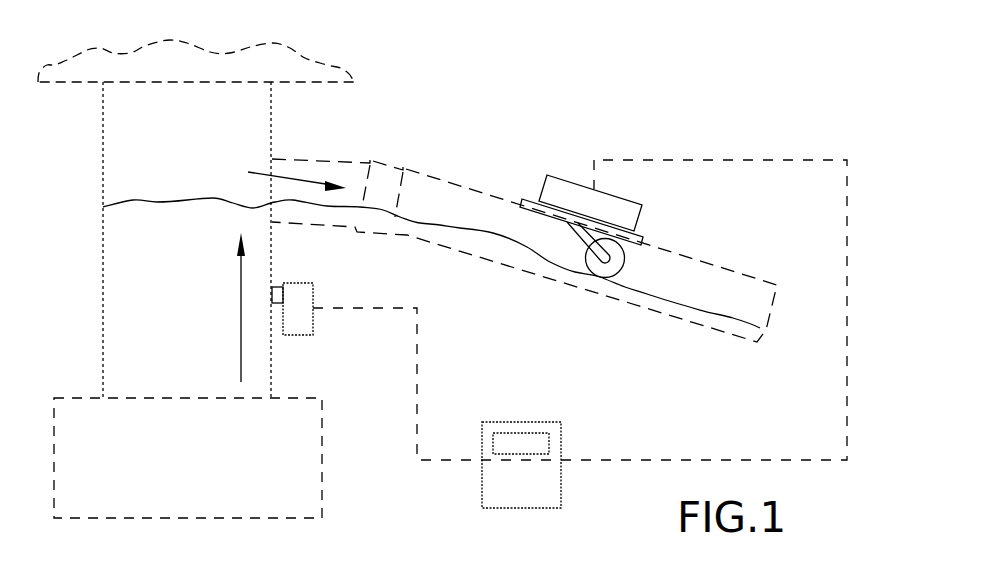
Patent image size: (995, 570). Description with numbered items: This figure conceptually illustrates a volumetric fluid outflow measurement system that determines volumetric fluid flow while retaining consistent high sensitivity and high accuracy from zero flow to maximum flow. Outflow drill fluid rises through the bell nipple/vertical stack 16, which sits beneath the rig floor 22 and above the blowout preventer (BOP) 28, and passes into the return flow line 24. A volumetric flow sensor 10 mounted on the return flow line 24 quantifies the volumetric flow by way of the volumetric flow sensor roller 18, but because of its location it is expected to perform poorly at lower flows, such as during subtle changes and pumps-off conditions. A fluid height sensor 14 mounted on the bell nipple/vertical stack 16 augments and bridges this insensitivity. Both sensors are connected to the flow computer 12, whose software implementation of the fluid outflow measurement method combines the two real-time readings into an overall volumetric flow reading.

The volumetric flow sensor 10 is at (568, 188).
The flow computer 12 is at (552, 430).
The fluid height sensor 14 is at (302, 295).
The bell nipple/vertical stack 16 is at (113, 163).
The volumetric flow sensor roller 18 is at (618, 258).
The rig floor 22 is at (290, 82).
The return flow line 24 is at (433, 181).
The blowout preventer (BOP) 28 is at (75, 405).